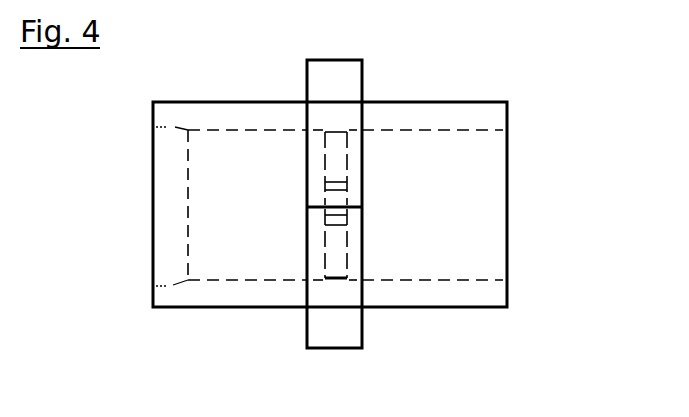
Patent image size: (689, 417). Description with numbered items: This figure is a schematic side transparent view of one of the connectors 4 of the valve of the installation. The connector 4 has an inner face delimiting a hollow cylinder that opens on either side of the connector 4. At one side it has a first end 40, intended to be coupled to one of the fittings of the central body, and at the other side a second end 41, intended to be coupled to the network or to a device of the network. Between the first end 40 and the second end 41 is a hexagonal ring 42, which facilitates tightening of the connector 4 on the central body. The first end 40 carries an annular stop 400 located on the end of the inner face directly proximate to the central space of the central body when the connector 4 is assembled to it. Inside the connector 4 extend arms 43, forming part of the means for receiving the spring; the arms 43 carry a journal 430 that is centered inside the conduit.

The connector 4 is at (484, 27).
The first end 40 is at (222, 319).
The annular stop 400 is at (170, 134).
The second end 41 is at (467, 97).
The hexagonal ring 42 is at (340, 76).
The arm 43 is at (335, 156).
The journal 430 is at (359, 212).